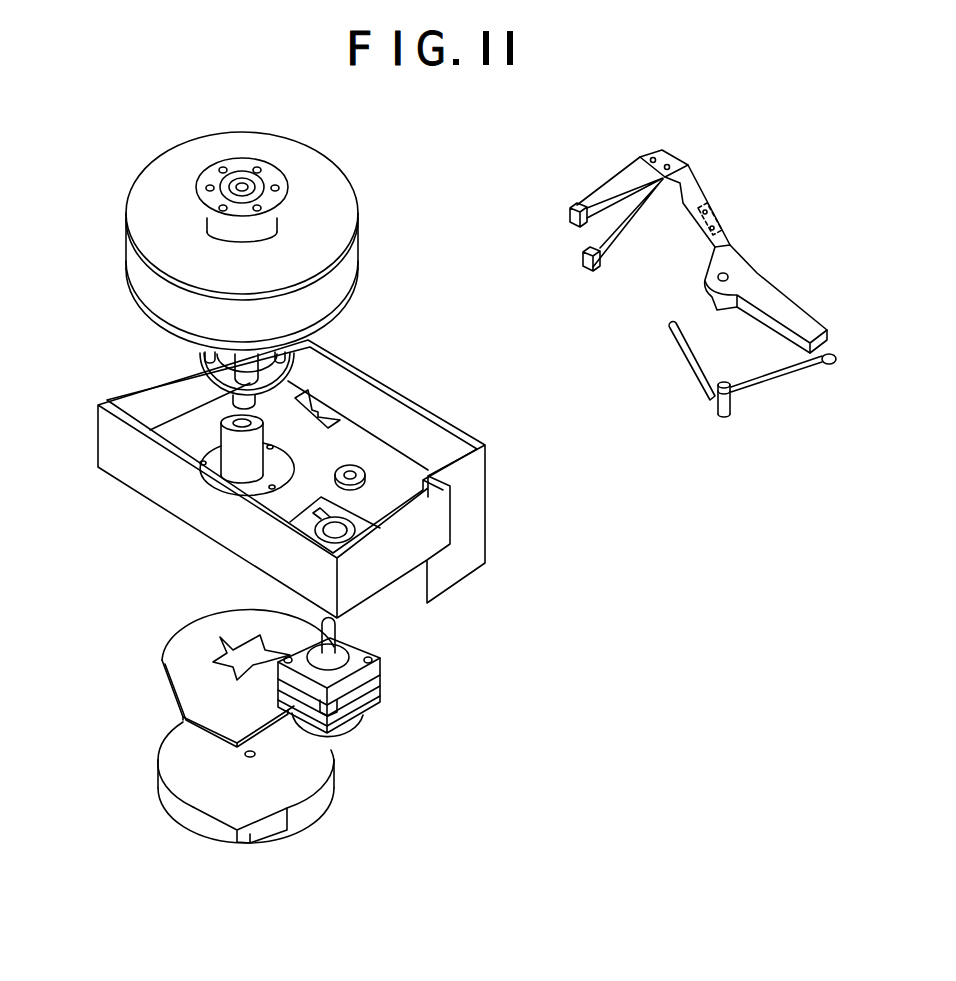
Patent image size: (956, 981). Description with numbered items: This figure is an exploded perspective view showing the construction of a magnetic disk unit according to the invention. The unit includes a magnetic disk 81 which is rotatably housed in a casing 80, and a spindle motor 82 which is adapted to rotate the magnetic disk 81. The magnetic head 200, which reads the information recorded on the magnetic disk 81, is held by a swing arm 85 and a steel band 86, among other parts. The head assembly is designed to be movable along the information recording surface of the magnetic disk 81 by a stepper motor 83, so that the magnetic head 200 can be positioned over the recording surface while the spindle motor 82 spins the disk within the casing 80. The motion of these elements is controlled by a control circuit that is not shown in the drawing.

The casing 80 is at (137, 477).
The magnetic disk 81 is at (329, 173).
The spindle motor 82 is at (323, 797).
The stepper motor 83 is at (380, 697).
The swing arm 85 is at (683, 249).
The steel band 86 is at (705, 402).
The magnetic head 200 is at (578, 203).